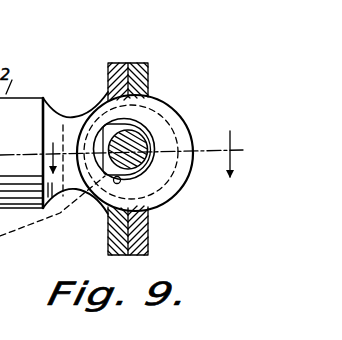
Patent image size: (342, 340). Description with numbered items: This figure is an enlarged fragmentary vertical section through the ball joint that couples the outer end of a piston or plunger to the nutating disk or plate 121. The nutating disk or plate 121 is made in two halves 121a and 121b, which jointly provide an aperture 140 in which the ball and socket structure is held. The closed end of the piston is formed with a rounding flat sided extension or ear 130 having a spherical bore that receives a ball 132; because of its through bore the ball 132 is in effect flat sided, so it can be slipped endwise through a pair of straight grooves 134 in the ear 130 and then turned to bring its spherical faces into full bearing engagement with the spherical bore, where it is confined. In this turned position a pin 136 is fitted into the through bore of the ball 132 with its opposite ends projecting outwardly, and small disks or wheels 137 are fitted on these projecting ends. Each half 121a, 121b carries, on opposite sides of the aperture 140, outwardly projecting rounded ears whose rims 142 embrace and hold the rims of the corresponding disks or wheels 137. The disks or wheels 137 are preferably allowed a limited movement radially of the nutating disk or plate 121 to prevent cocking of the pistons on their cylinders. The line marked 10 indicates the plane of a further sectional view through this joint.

The section line 10- 10 is at (133, 160).
The nutating disk or plate 121 is at (151, 239).
The half of nutating disk 121a is at (115, 63).
The half of nutating disk 121b is at (132, 63).
The extension or ear 130 is at (191, 131).
The ball 132 is at (146, 166).
The straight grooves 134 is at (121, 180).
The pin 136 is at (143, 135).
The disks or wheels 137 is at (96, 96).
The aperture 140 is at (165, 102).
The rim 142 is at (114, 183).